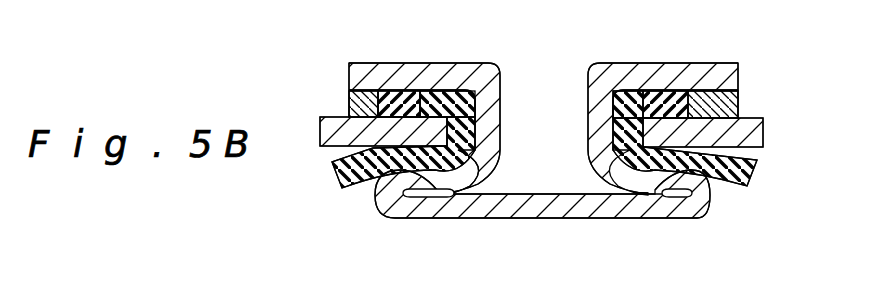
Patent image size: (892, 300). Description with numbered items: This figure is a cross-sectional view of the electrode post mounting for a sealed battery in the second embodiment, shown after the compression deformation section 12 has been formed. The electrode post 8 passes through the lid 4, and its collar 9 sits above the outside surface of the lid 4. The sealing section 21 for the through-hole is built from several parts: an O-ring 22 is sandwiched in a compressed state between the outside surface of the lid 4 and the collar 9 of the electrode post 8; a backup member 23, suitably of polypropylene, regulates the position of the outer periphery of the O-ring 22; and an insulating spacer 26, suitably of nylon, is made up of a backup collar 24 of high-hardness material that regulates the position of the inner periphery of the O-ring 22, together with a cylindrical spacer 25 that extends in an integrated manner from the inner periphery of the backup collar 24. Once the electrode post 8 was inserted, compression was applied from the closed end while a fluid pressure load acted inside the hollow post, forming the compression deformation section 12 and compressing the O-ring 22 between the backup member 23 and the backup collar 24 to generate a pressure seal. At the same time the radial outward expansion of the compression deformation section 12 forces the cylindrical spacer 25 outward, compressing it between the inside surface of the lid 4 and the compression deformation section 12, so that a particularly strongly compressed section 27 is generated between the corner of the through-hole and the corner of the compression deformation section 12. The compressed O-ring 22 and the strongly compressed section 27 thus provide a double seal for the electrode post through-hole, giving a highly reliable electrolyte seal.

The lid 4 is at (333, 131).
The electrode post 8 is at (542, 232).
The collar 9 is at (365, 78).
The compression deformation section 12 is at (550, 207).
The sealing section 21 is at (745, 109).
The O-ring 22 is at (396, 90).
The backup member 23 is at (350, 105).
The backup collar 24 is at (453, 90).
The cylindrical spacer 25 is at (360, 174).
The insulating spacer 26 is at (758, 158).
The strongly compressed section 27 is at (448, 150).